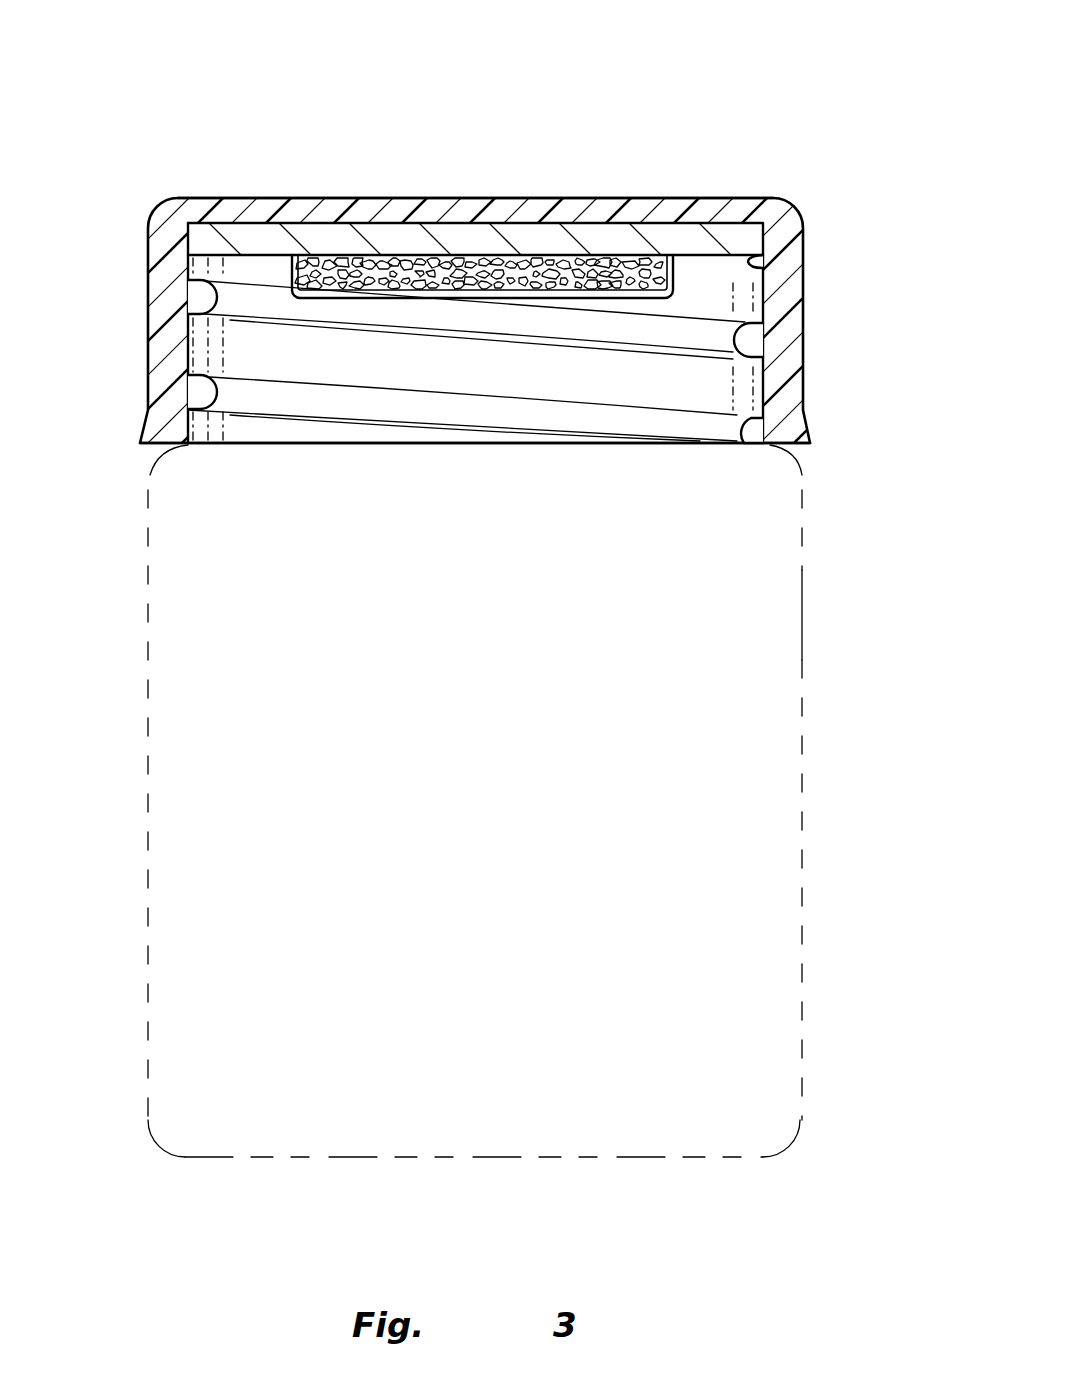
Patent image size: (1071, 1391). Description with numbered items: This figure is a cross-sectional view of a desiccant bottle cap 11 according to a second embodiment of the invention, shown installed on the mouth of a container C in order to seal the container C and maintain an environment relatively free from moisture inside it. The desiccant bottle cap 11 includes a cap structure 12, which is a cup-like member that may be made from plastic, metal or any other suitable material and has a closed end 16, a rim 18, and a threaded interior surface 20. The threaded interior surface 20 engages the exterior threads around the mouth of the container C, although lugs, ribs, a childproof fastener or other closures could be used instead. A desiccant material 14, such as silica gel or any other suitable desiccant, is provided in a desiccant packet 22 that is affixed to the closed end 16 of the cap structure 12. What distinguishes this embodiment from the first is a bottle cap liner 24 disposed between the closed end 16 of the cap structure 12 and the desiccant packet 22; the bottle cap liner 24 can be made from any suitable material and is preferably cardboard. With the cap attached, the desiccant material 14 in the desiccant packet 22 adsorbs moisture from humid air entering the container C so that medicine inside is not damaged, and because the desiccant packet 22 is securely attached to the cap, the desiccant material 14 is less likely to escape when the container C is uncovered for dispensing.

The desiccant bottle cap 11 is at (533, 108).
The cap structure 12 is at (535, 247).
The desiccant material 14 is at (610, 257).
The closed end 16 is at (337, 200).
The rim 18 is at (147, 257).
The threaded interior surface 20 is at (742, 383).
The desiccant packet 22 is at (740, 280).
The bottle cap liner 24 is at (718, 232).
The container C is at (802, 643).